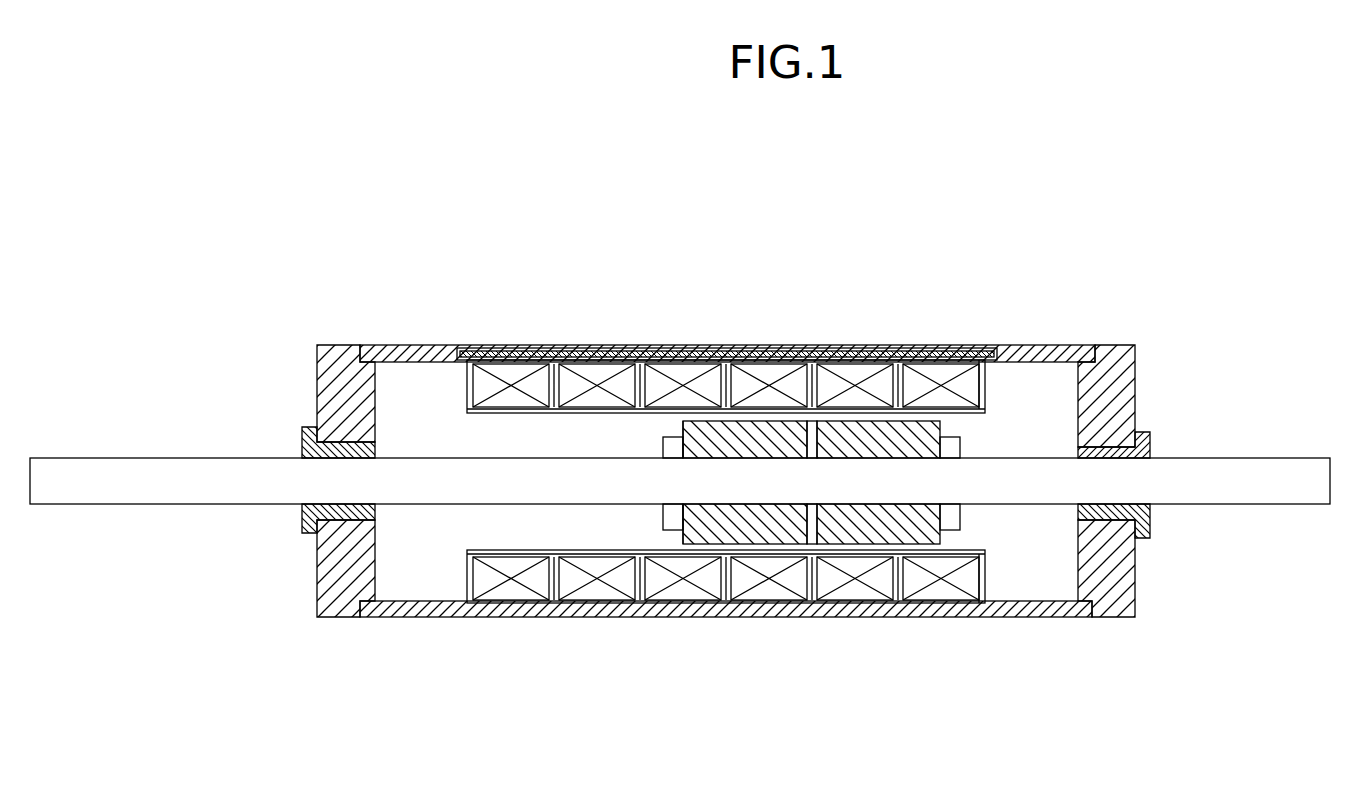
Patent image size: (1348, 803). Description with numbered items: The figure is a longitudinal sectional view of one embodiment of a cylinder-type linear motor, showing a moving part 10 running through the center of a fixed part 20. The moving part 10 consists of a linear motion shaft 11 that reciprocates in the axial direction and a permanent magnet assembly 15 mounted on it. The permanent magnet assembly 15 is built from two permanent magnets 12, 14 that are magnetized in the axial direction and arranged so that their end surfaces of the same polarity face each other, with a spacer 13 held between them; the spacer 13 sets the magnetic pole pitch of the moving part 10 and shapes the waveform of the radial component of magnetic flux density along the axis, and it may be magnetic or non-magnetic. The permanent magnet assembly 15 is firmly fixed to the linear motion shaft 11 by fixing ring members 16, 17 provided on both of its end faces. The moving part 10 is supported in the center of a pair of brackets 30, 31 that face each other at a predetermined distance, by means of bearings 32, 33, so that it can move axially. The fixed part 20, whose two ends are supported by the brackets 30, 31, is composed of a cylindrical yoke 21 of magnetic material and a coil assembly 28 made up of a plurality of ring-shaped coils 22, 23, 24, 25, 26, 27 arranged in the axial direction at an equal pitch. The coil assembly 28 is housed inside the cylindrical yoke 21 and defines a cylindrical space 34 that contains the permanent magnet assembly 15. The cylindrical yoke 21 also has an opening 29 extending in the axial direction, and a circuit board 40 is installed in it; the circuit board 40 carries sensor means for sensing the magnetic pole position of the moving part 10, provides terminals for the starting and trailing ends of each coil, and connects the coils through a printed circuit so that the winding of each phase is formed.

The moving part 10 is at (729, 497).
The linear motion shaft 11 is at (1228, 478).
The permanent magnet 12 is at (744, 530).
The spacer 13 is at (820, 535).
The permanent magnet 14 is at (910, 532).
The permanent magnet assembly 15 is at (678, 540).
The fixing ring member 16 is at (668, 512).
The fixing ring member 17 is at (955, 518).
The fixed part 20 is at (467, 560).
The cylindrical yoke 21 is at (382, 604).
The ring-shaped coil 22 is at (517, 363).
The ring-shaped coil 23 is at (613, 363).
The ring-shaped coil 24 is at (697, 363).
The ring-shaped coil 25 is at (768, 363).
The ring-shaped coil 26 is at (853, 363).
The ring-shaped coil 27 is at (930, 363).
The coil assembly 28 is at (993, 393).
The opening 29 is at (573, 352).
The bracket 30 is at (327, 605).
The bracket 31 is at (1118, 602).
The bearing 32 is at (300, 518).
The bearing 33 is at (1150, 522).
The cylindrical space 34 is at (578, 438).
The circuit board 40 is at (698, 292).